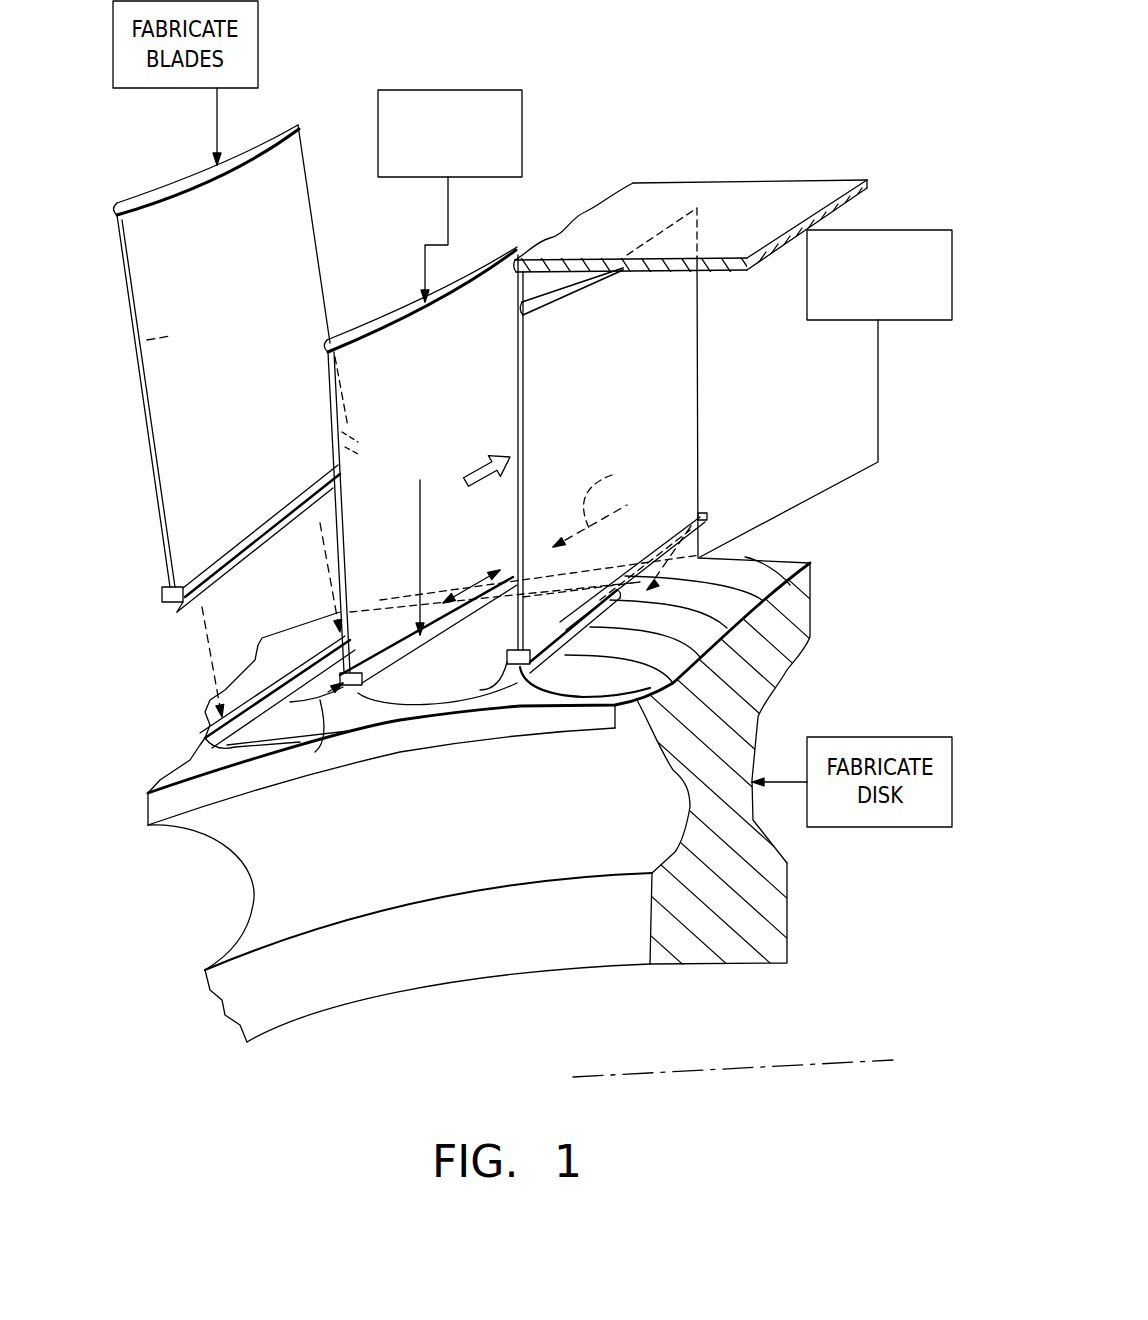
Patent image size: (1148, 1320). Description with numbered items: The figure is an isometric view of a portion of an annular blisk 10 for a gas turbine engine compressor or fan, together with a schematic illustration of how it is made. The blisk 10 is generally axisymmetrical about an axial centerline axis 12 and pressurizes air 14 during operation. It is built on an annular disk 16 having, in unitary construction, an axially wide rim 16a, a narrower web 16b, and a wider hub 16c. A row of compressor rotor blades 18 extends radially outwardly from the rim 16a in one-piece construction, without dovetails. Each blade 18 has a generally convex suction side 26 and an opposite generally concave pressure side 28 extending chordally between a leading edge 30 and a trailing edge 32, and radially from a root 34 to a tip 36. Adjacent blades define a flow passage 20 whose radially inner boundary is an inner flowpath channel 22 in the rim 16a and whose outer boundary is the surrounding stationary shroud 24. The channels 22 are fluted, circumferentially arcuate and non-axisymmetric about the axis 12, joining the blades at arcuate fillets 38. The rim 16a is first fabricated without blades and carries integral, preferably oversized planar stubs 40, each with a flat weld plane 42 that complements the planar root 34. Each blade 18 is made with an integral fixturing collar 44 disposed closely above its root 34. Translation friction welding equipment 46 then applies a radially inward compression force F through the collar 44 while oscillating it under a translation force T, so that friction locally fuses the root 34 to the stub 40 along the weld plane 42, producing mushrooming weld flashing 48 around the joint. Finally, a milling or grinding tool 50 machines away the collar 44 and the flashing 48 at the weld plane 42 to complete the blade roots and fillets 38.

The annular blisk 10 is at (222, 890).
The axial centerline axis 12 is at (773, 1067).
The air 14 is at (473, 470).
The annular disk 16 is at (574, 785).
The rim 16a is at (613, 720).
The web 16b is at (687, 797).
The hub 16c is at (576, 924).
The compressor rotor blades 18 is at (333, 288).
The flow passage 20 is at (500, 374).
The inner flowpath channel 22 is at (443, 693).
The annular casing or shroud 24 is at (753, 177).
The suction side 26 is at (247, 368).
The pressure side 28 is at (135, 355).
The leading edge 30 is at (143, 483).
The trailing edge 32 is at (317, 208).
The root 34 is at (235, 583).
The tip 36 is at (173, 182).
The arcuate fillets 38 is at (387, 707).
The planar stubs 40 is at (205, 738).
The planar weld surface 42 is at (310, 668).
The fixturing collar 44 is at (168, 589).
The translation friction welding equipment 46 is at (522, 130).
The weld flashing 48 is at (557, 690).
The milling or grinding tool 50 is at (872, 228).
The compression or upset force F is at (420, 520).
The translation force T is at (458, 614).